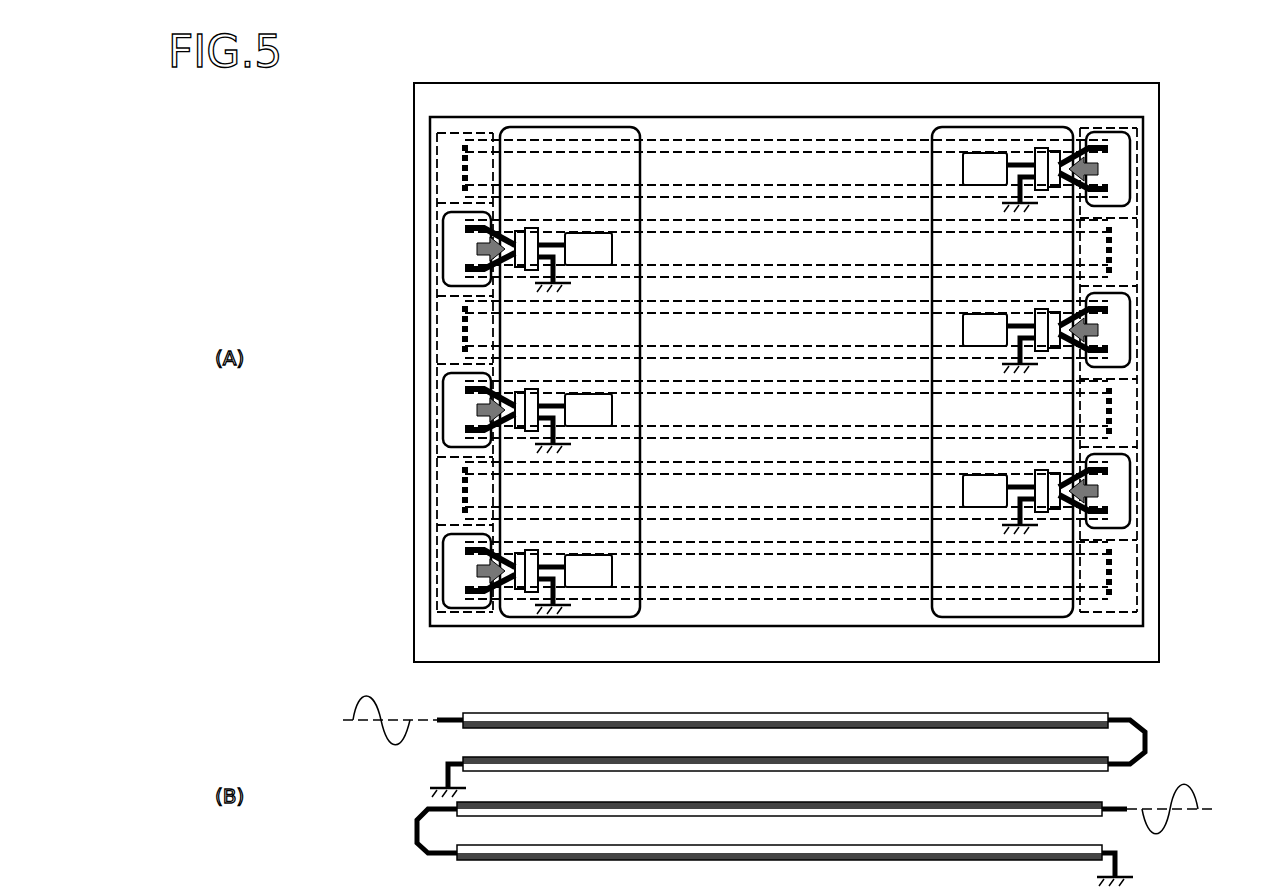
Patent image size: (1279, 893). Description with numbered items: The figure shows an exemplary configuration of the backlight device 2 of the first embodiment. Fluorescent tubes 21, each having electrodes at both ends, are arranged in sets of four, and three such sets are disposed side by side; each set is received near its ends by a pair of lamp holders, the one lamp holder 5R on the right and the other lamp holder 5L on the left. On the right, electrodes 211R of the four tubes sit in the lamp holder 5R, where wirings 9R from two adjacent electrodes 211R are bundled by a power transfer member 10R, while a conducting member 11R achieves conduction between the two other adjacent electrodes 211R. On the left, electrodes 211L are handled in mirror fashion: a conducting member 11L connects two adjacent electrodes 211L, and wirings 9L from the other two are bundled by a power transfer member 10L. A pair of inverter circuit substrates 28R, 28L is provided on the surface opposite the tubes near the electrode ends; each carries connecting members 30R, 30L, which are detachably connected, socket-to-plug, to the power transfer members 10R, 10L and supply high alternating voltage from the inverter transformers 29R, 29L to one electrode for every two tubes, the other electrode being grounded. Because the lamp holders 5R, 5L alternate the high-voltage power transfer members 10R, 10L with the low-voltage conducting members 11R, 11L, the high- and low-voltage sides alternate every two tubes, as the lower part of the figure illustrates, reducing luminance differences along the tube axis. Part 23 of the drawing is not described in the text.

The backlight device 2 is at (1158, 67).
The fluorescent tube 21 is at (742, 265).
The electrode 211L is at (465, 188).
The electrode 211R is at (1110, 190).
The substrate 23 is at (1143, 380).
The inverter circuit substrate 28L is at (584, 127).
The inverter circuit substrate 28R is at (987, 127).
The inverter transformer 29L is at (612, 249).
The inverter transformer 29R is at (963, 169).
The connecting member 30L is at (535, 228).
The connecting member 30R is at (1040, 148).
The power transfer member 10L is at (520, 231).
The power transfer member 10R is at (1053, 151).
The wiring 9L is at (481, 213).
The wiring 9R is at (1099, 187).
The lamp holder 5L is at (437, 203).
The lamp holder 5R is at (1137, 208).
The conducting member 11L is at (462, 170).
The conducting member 11R is at (1112, 242).